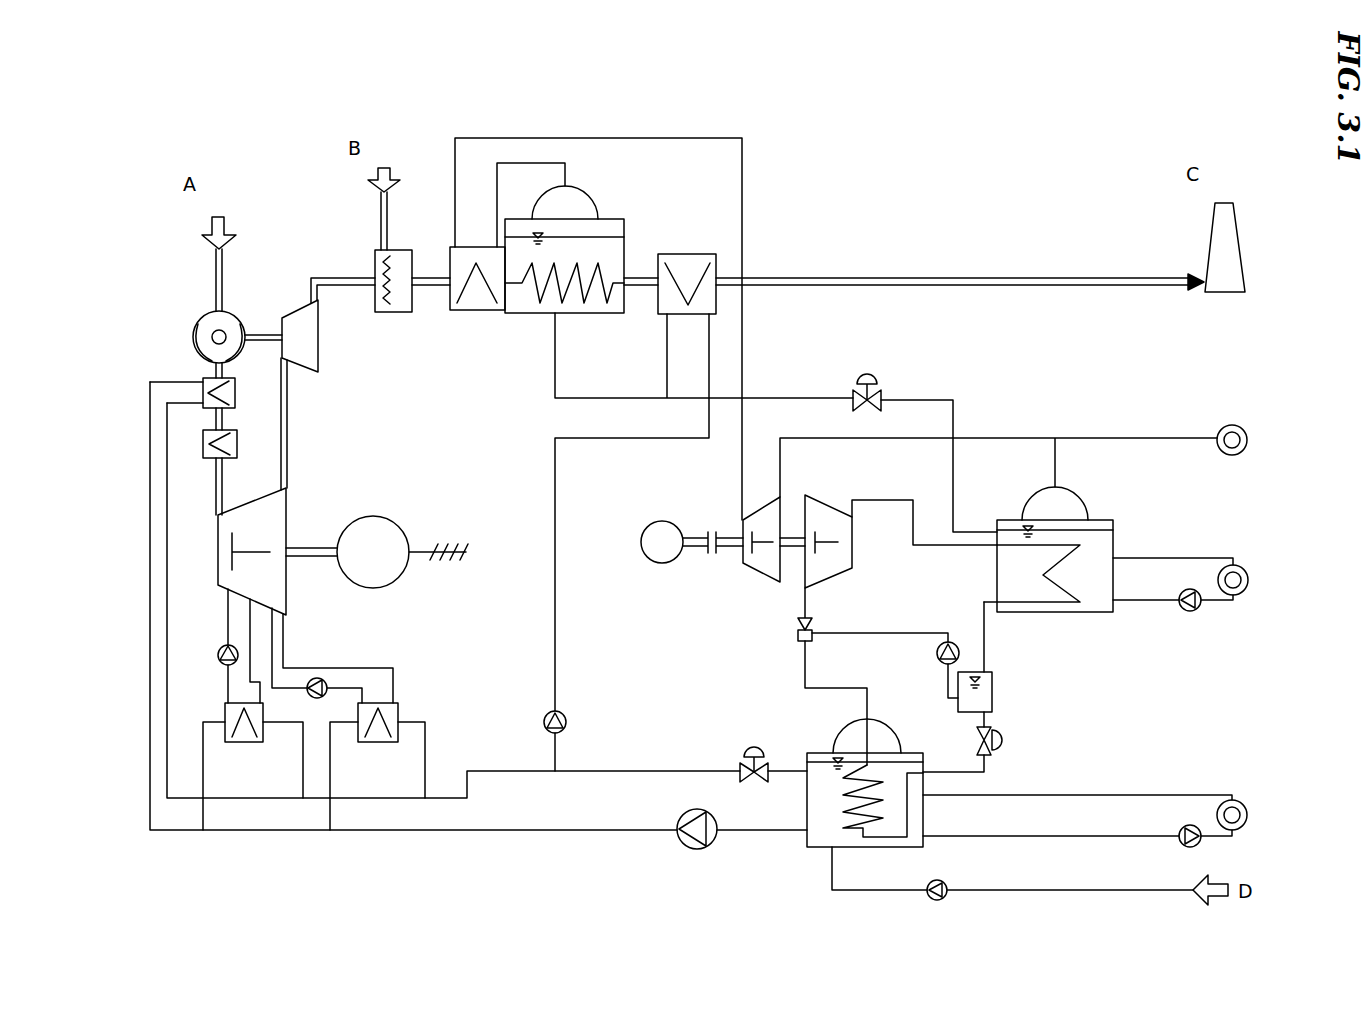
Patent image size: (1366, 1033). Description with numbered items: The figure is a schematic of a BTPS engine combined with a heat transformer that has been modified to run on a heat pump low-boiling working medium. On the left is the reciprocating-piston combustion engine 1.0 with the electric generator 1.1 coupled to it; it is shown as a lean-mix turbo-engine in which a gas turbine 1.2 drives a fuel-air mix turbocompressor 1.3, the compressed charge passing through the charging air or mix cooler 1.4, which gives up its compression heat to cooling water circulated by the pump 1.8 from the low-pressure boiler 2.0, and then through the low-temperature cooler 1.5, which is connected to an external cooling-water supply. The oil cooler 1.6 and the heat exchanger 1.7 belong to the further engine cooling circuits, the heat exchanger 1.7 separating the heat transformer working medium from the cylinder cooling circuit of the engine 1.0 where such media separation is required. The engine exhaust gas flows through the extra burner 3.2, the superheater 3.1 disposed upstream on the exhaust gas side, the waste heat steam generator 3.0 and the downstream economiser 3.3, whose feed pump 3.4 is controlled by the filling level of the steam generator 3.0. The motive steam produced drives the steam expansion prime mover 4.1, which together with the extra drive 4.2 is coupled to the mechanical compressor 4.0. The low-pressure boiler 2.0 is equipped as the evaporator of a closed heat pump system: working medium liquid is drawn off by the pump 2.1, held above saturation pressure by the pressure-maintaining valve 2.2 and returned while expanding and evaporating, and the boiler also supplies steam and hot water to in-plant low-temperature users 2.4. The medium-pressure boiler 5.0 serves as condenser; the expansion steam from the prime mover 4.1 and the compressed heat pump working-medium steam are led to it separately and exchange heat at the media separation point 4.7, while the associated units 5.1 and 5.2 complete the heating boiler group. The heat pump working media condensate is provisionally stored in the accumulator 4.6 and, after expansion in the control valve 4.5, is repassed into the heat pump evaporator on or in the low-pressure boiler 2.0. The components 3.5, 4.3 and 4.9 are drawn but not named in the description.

The reciprocating-piston combustion engine 1.0 is at (277, 551).
The electric generator 1.1 is at (402, 546).
The gas turbine 1.2 is at (282, 395).
The fuel-air mix turbocompressor 1.3 is at (222, 342).
The charging air or mix cooler 1.4 is at (234, 404).
The low-temperature cooler 1.5 is at (234, 472).
The oil cooler 1.6 is at (245, 738).
The heat exchanger 1.7 is at (378, 738).
The pump 1.8 is at (691, 843).
The low-pressure boiler 2.0 is at (865, 781).
The pump 2.1 is at (941, 903).
The pressure-maintaining valve 2.2 is at (752, 749).
The in-plant low-temperature user 2.4 is at (1234, 799).
The waste heat steam generator 3.0 is at (564, 264).
The superheater 3.1 is at (477, 295).
The extra burner 3.2 is at (393, 296).
The economiser 3.3 is at (687, 297).
The feed pump 3.4 is at (571, 722).
The steam control valve 3.5 is at (867, 378).
The mechanical compressor 4.0 is at (831, 552).
The steam expansion prime mover 4.1 is at (761, 553).
The extra drive 4.2 is at (662, 565).
The throttle valve 4.3 is at (821, 626).
The control valve 4.5 is at (1006, 741).
The accumulator 4.6 is at (986, 677).
The media separation point 4.7 is at (1032, 573).
The heating coil 4.9 is at (868, 801).
The medium-pressure heating boiler 5.0 is at (1052, 549).
The medium-pressure heating boiler sub-unit 5.1 is at (1236, 565).
The medium-pressure heating boiler sub-unit 5.2 is at (1234, 427).